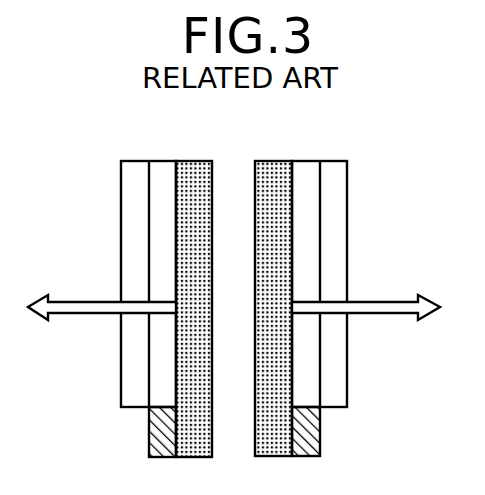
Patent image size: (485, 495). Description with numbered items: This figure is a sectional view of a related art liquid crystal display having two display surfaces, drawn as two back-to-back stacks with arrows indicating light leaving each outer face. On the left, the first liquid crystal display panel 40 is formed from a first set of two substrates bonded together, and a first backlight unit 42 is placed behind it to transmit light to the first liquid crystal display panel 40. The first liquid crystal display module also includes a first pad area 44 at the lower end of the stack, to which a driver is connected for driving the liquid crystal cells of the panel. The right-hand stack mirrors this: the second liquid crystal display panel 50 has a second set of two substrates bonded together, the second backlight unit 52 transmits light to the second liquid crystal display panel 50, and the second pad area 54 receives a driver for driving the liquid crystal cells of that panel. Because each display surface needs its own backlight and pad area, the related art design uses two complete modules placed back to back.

The first liquid crystal display panel 40 is at (121, 183).
The first backlight unit 42 is at (195, 161).
The first pad area 44 is at (149, 440).
The second liquid crystal display panel 50 is at (305, 165).
The second backlight unit 52 is at (272, 161).
The second pad area 54 is at (320, 438).